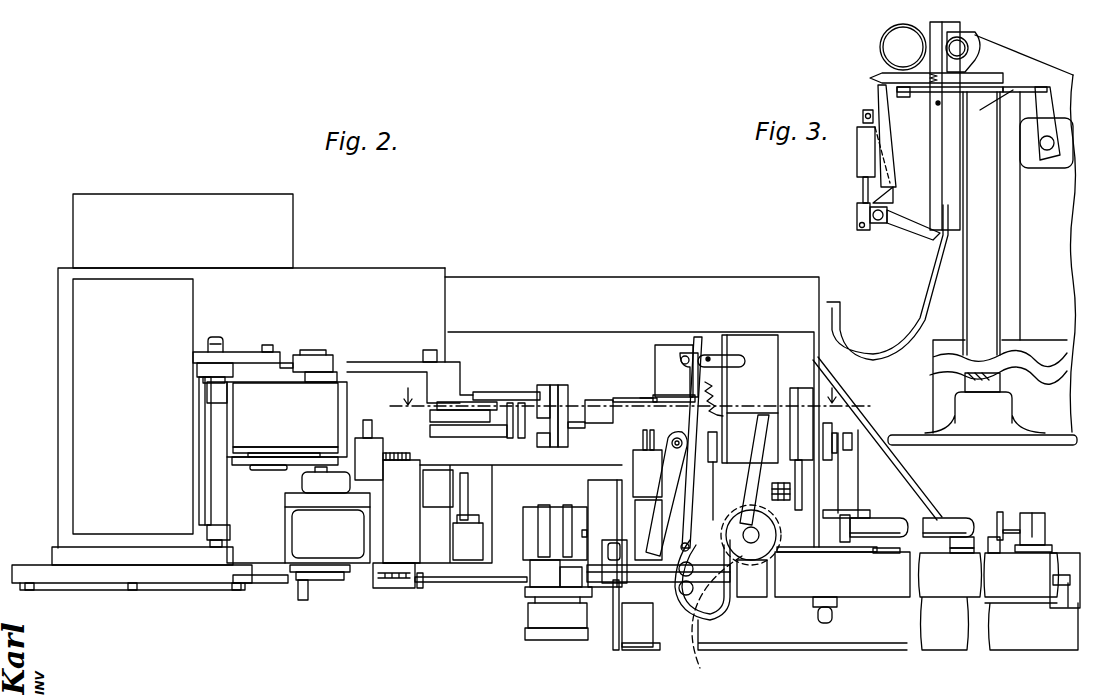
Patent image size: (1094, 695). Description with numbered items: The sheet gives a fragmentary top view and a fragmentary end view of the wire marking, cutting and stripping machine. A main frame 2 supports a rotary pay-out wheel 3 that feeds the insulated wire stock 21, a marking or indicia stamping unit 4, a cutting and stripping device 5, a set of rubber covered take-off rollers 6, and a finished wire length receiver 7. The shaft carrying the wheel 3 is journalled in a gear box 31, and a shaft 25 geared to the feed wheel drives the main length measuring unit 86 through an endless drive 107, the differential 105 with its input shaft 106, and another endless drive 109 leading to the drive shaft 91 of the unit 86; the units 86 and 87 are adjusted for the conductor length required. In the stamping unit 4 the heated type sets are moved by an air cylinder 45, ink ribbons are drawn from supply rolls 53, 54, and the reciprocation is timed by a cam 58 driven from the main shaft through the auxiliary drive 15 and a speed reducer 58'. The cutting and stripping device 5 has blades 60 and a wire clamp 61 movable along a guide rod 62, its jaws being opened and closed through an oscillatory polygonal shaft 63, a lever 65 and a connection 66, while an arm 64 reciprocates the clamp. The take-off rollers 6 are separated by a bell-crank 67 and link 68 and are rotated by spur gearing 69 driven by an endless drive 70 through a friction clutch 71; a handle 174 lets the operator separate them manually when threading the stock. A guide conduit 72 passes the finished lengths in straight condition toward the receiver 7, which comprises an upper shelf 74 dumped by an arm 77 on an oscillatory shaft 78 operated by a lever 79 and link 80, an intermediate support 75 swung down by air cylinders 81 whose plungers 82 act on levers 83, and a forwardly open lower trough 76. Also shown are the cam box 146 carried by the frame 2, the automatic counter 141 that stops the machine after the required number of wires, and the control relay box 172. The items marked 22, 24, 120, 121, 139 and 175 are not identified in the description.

In FIG. 2, the main frame 2 is at (522, 278).
In FIG. 3, the main frame 2 is at (940, 378).
In FIG. 2, the pay-out wheel 3 is at (252, 582).
In FIG. 2, the marking or indicia stamping unit 4 is at (527, 592).
In FIG. 2, the cutting and stripping device 5 is at (610, 587).
In FIG. 2, the take-off rollers 6 is at (688, 596).
In FIG. 2, the finished wire length receiver 7 is at (752, 592).
In FIG. 2, the auxiliary endless drive 15 is at (410, 457).
In FIG. 2, the wire stock 21 is at (445, 582).
In FIG. 3, the wire stock 21 is at (880, 83).
In FIG. 2, the section line 22 is at (418, 420).
In FIG. 2, the bolt 24 is at (232, 350).
In FIG. 2, the shaft 25 is at (212, 488).
In FIG. 2, the gear box 31 is at (82, 416).
In FIG. 2, the air cylinder 45 is at (535, 575).
In FIG. 2, the supply roll 53 is at (543, 507).
In FIG. 2, the supply roll 54 is at (568, 507).
In FIG. 2, the cam 58 is at (502, 514).
In FIG. 2, the speed reducer 58' is at (401, 511).
In FIG. 2, the cutting and stripping blades 60 is at (638, 625).
In FIG. 2, the wire clamp 61 is at (612, 553).
In FIG. 2, the guide rod 62 is at (683, 543).
In FIG. 2, the oscillatory polygonal shaft 63 is at (655, 578).
In FIG. 2, the arm 64 is at (678, 438).
In FIG. 2, the lever 65 is at (717, 436).
In FIG. 2, the connection 66 is at (715, 485).
In FIG. 2, the bell-crank 67 is at (693, 354).
In FIG. 2, the link 68 is at (718, 390).
In FIG. 2, the spur gearing 69 is at (744, 560).
In FIG. 2, the endless drive 70 is at (792, 493).
In FIG. 2, the friction clutch 71 is at (775, 563).
In FIG. 2, the guide conduit 72 is at (722, 615).
In FIG. 2, the upper shelf 74 is at (1066, 596).
In FIG. 3, the upper shelf 74 is at (902, 92).
In FIG. 3, the intermediate support 75 is at (900, 228).
In FIG. 2, the lower trough 76 is at (985, 652).
In FIG. 3, the lower trough 76 is at (870, 353).
In FIG. 3, the arm 77 is at (965, 82).
In FIG. 2, the oscillatory shaft 78 is at (940, 520).
In FIG. 3, the oscillatory shaft 78 is at (976, 40).
In FIG. 2, the lever 79 is at (852, 433).
In FIG. 3, the lever 79 is at (1047, 160).
In FIG. 2, the link 80 is at (847, 501).
In FIG. 3, the link 80 is at (998, 102).
In FIG. 2, the air cylinders 81 is at (826, 623).
In FIG. 3, the air cylinders 81 is at (860, 160).
In FIG. 3, the plungers 82 is at (862, 201).
In FIG. 3, the levers 83 is at (866, 232).
In FIG. 2, the main length measuring unit 86 is at (327, 528).
In FIG. 2, the unit 87 is at (316, 580).
In FIG. 2, the drive shaft 91 is at (326, 480).
In FIG. 2, the differential 105 is at (287, 472).
In FIG. 2, the input shaft 106 is at (272, 368).
In FIG. 2, the endless drive 107 is at (197, 357).
In FIG. 2, the endless drive 109 is at (240, 467).
In FIG. 2, the block 120 is at (338, 375).
In FIG. 2, the block 121 is at (323, 358).
In FIG. 2, the housing 139 is at (455, 375).
In FIG. 2, the automatic counter 141 is at (380, 590).
In FIG. 2, the cam box 146 is at (492, 396).
In FIG. 2, the control relay box 172 is at (183, 231).
In FIG. 2, the handle 174 is at (730, 356).
In FIG. 2, the spring 175 is at (712, 383).